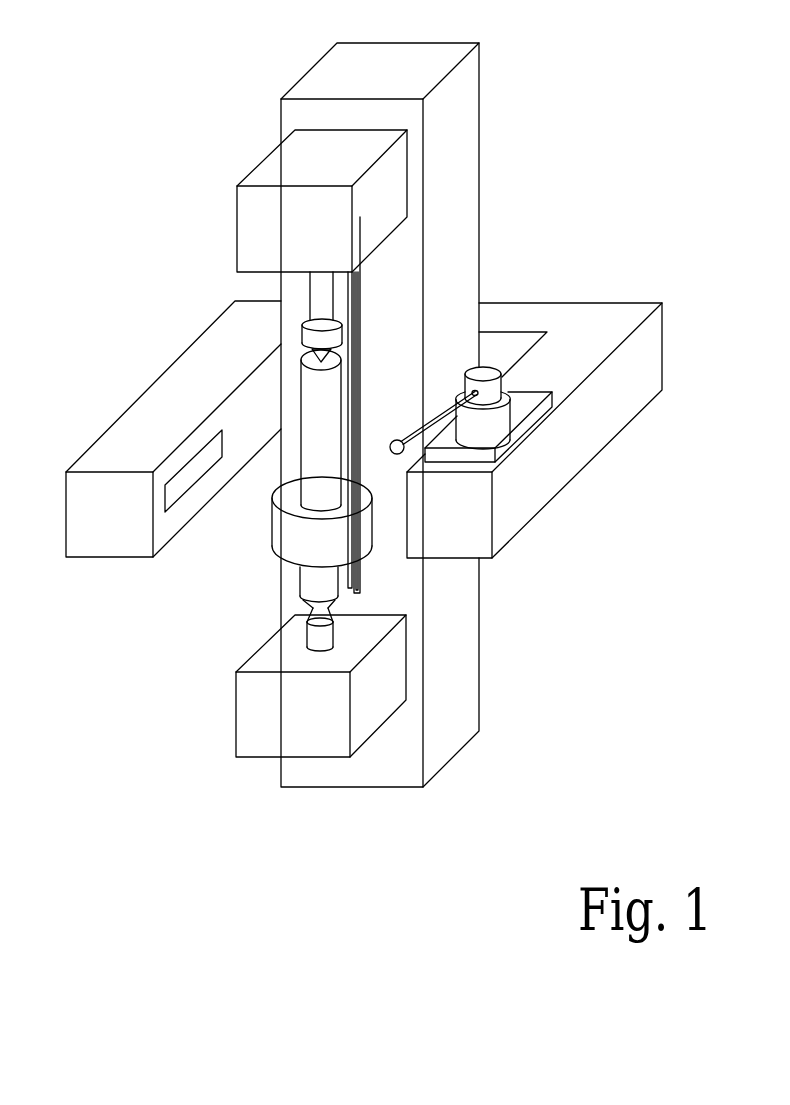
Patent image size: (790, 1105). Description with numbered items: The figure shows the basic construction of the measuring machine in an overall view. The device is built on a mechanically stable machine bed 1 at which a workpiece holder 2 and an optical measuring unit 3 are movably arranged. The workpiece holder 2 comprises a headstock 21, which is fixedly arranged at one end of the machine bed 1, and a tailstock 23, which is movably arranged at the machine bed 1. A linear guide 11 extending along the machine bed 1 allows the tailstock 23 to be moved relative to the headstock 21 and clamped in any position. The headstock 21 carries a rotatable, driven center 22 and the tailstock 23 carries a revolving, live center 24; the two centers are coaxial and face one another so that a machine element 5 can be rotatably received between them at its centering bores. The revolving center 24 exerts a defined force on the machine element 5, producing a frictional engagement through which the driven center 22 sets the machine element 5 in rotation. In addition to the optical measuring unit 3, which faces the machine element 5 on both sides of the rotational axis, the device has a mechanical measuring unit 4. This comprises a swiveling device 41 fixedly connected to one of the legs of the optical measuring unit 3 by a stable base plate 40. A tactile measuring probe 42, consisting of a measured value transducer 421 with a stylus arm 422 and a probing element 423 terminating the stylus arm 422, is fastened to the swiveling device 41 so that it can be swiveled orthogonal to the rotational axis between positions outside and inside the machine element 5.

The machine bed 1 is at (453, 165).
The linear guide 11 is at (357, 305).
The workpiece holder 2 is at (55, 178).
The headstock 21 is at (293, 713).
The driven center 22 is at (318, 639).
The tailstock 23 is at (287, 230).
The revolving center 24 is at (318, 364).
The optical measuring unit 3 is at (592, 336).
The mechanical measuring unit 4 is at (541, 523).
The base plate 40 is at (520, 432).
The swiveling device 41 is at (510, 410).
The tactile measuring probe 42 is at (525, 523).
The measured value transducer 421 is at (487, 398).
The stylus arm 422 is at (463, 405).
The probing element 423 is at (407, 446).
The machine element 5 is at (324, 559).